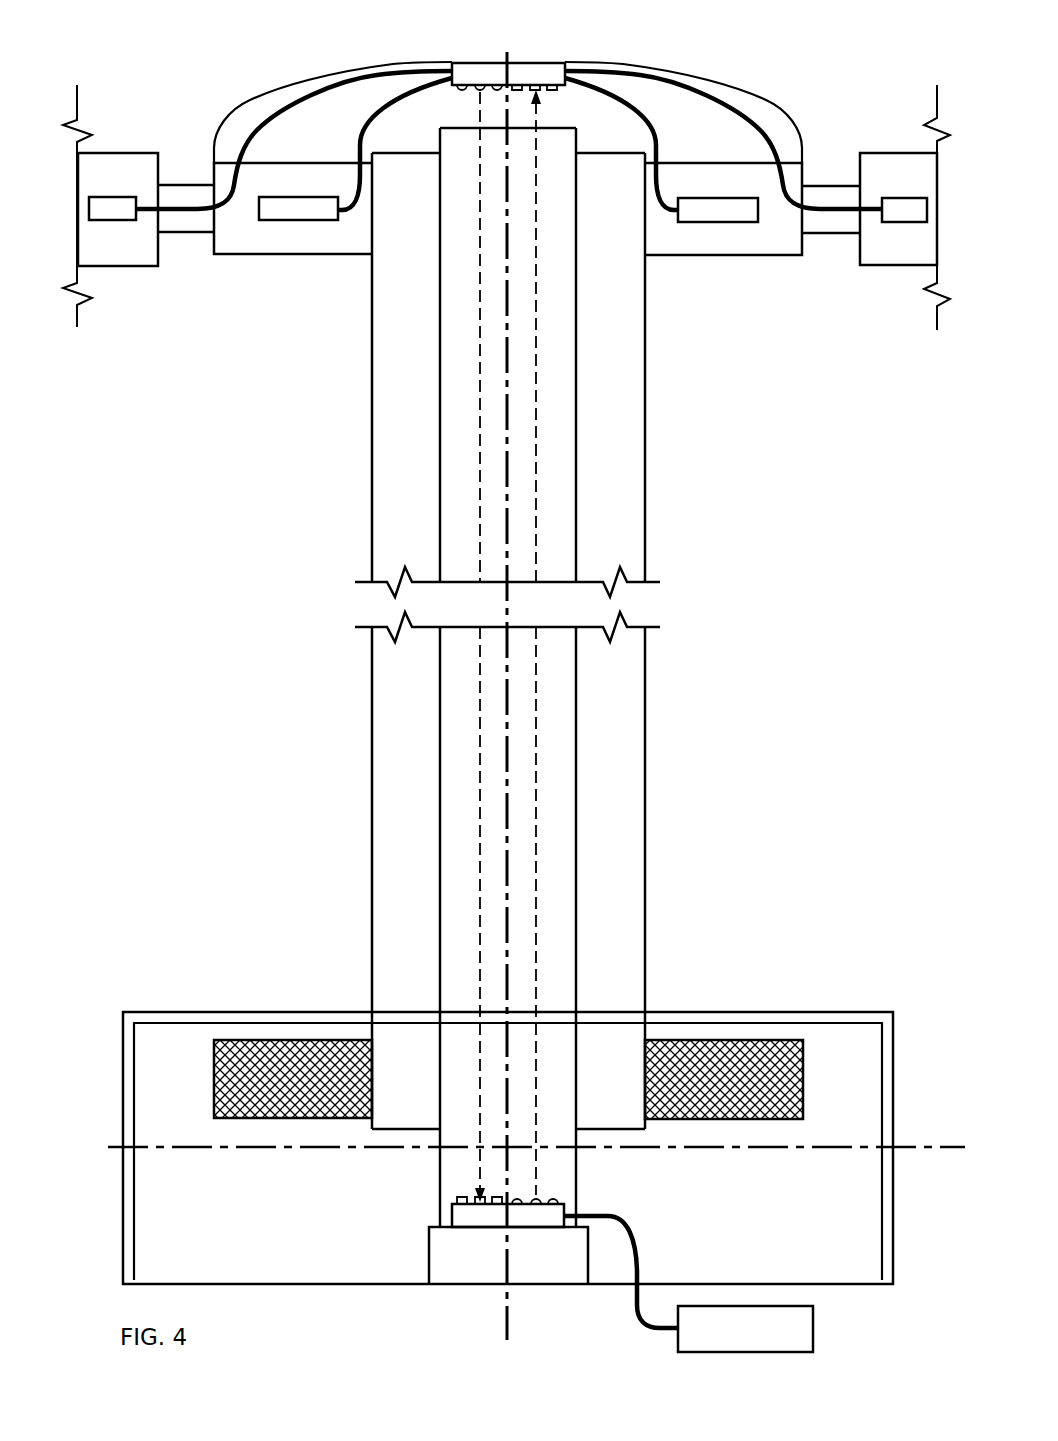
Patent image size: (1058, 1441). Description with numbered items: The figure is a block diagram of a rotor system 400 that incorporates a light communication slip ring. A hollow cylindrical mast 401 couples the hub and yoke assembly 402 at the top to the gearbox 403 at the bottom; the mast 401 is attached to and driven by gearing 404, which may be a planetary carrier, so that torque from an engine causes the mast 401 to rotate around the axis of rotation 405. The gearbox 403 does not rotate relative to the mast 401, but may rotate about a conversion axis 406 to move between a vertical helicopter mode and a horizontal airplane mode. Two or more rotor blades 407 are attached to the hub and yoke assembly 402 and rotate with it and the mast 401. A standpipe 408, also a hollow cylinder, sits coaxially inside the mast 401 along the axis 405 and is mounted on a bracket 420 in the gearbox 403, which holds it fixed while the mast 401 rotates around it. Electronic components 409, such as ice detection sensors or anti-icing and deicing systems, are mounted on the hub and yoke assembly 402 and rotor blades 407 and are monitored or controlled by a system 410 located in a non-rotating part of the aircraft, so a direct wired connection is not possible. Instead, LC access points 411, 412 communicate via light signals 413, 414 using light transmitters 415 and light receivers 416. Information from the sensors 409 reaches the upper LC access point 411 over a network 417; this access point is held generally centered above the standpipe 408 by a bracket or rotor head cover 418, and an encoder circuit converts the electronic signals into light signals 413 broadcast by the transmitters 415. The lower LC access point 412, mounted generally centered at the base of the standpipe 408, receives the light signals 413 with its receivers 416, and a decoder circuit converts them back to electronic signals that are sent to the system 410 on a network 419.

The rotor system 400 is at (186, 61).
The mast 401 is at (371, 393).
The hub and yoke assembly 402 is at (236, 246).
The gearbox 403 is at (251, 1010).
The gearing 404 is at (212, 1078).
The axis of rotation 405 is at (505, 1322).
The conversion axis 406 is at (76, 1154).
The rotor blades 407 is at (117, 152).
The standpipe 408 is at (438, 490).
The electronic components 409 is at (110, 222).
The system 410 is at (814, 1338).
The LC access point 411 is at (546, 73).
The LC access point 412 is at (452, 1216).
The light signals 413 is at (478, 826).
The light signals 414 is at (538, 820).
The light transmitters 415 is at (463, 92).
The light receivers 416 is at (548, 93).
The network 417 is at (268, 117).
The rotor head cover 418 is at (363, 72).
The network 419 is at (637, 1302).
The bracket 420 is at (428, 1253).